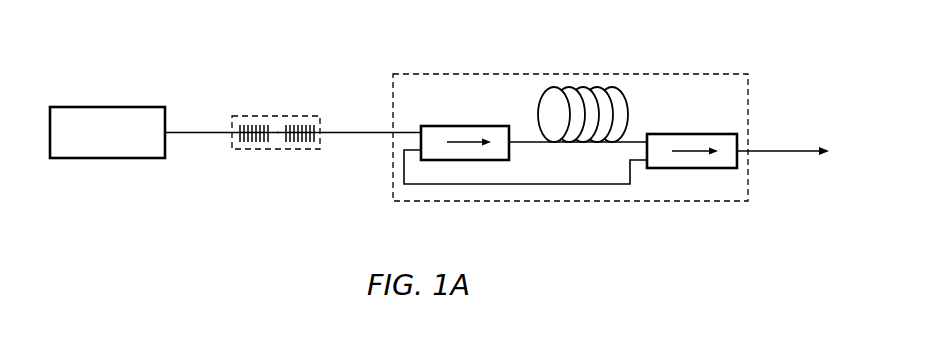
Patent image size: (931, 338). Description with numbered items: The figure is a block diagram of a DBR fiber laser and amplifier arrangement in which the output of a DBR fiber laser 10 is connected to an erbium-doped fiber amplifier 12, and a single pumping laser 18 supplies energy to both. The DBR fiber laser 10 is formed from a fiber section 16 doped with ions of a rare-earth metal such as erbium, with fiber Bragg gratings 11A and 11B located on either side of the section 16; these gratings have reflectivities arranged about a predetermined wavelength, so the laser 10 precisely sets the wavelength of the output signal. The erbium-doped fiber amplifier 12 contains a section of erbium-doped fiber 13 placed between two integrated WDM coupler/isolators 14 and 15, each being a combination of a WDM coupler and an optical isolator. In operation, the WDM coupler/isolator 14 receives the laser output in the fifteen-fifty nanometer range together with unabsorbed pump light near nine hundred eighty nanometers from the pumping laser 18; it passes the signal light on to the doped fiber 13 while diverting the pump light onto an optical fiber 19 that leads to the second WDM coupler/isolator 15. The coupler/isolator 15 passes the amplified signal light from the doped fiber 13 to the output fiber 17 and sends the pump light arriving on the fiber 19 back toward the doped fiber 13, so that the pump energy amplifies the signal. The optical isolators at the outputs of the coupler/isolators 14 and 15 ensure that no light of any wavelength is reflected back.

The DBR fiber laser 10 is at (255, 115).
The fiber Bragg grating 11A is at (253, 143).
The fiber Bragg grating 11B is at (298, 143).
The erbium-doped fiber amplifier 12 is at (752, 103).
The erbium-doped fiber 13 is at (627, 113).
The integrated WDM coupler/isolator 14 is at (467, 126).
The integrated WDM coupler/isolator 15 is at (678, 168).
The fiber section 16 is at (278, 132).
The output fiber 17 is at (782, 152).
The pumping laser 18 is at (105, 158).
The optical fiber 19 is at (567, 187).